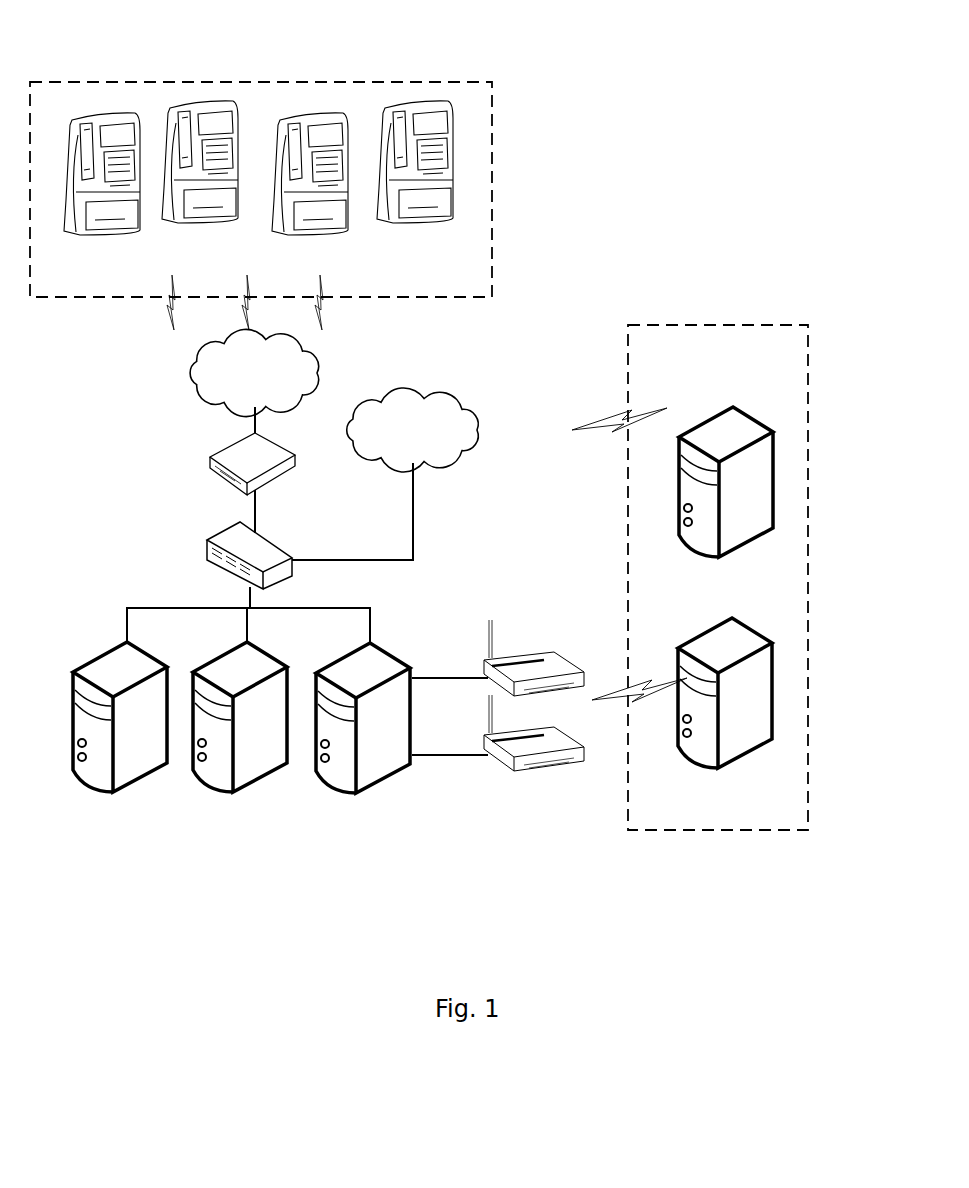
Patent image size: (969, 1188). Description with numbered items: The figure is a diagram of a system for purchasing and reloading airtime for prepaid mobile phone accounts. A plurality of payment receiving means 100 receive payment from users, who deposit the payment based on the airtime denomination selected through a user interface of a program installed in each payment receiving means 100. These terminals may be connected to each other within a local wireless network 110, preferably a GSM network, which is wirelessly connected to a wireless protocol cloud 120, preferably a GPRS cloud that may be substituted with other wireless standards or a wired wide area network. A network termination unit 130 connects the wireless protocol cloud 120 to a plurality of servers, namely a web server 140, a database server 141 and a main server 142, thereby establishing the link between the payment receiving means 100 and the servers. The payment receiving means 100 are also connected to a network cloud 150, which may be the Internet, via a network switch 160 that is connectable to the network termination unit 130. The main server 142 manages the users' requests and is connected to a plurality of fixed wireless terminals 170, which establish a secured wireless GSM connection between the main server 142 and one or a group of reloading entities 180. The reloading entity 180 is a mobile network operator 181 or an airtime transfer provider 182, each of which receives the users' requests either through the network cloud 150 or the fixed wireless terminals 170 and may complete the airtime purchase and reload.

The payment receiving means 100 is at (450, 203).
The local wireless network 110 is at (492, 96).
The wireless protocol cloud 120 is at (200, 370).
The network termination unit 130 is at (284, 470).
The web server 140 is at (161, 739).
The database server 141 is at (281, 739).
The main server 142 is at (401, 739).
The network cloud 150 is at (432, 398).
The network switch 160 is at (292, 570).
The fixed wireless terminal 170 is at (548, 650).
The reloading entity 180 is at (808, 330).
The mobile network operator 181 is at (775, 466).
The airtime transfer provider 182 is at (772, 695).